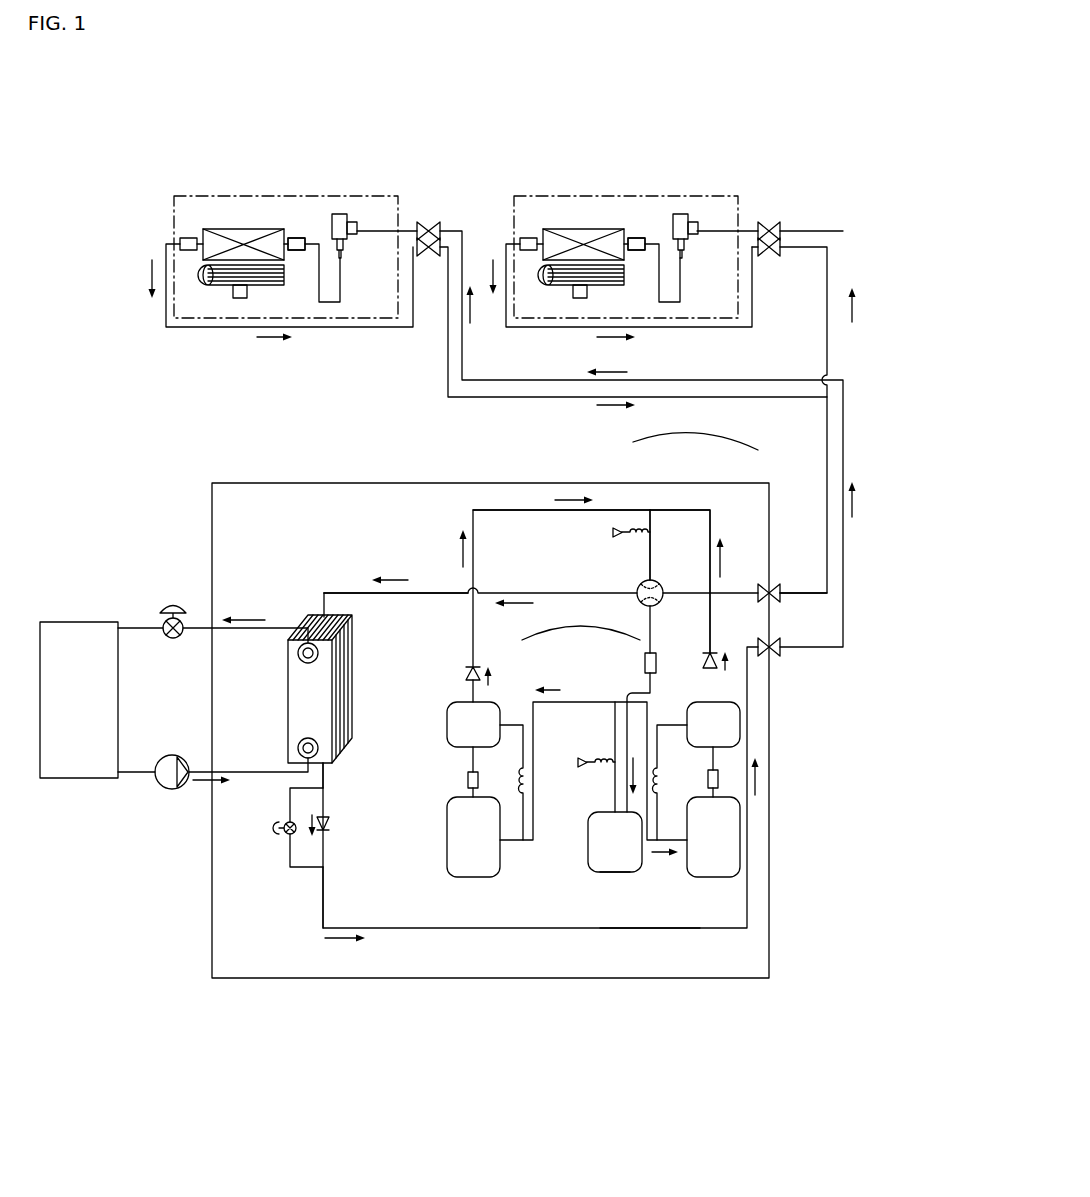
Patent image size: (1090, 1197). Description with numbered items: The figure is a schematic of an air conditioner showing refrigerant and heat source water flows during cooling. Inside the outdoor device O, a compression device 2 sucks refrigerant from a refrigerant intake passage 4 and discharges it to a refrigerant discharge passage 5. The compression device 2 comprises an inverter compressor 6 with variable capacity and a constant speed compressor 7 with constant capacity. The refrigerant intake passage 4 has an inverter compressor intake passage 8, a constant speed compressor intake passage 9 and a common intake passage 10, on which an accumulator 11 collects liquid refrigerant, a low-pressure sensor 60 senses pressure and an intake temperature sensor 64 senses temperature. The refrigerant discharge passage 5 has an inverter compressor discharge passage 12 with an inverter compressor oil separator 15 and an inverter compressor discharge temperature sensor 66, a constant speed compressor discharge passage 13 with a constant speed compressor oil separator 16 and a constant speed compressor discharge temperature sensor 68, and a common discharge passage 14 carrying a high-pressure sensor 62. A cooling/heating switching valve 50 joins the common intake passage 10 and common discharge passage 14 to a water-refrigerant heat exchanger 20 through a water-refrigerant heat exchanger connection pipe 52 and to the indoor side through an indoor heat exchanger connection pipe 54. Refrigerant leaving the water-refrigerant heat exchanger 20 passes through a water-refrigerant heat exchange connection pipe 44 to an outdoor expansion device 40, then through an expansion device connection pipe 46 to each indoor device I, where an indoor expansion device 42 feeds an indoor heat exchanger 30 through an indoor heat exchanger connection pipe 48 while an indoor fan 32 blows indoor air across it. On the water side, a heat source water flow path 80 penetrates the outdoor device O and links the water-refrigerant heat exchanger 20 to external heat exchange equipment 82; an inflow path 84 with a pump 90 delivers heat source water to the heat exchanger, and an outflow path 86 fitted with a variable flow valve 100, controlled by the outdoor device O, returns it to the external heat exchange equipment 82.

The indoor device I is at (395, 184).
The indoor heat exchanger 30 is at (214, 240).
The indoor fan 32 is at (205, 275).
The indoor expansion device 42 is at (339, 222).
The indoor heat exchanger connection pipe 48 is at (305, 241).
The outdoor device O is at (752, 992).
The compression device 2 is at (448, 900).
The refrigerant intake passage 4 is at (581, 621).
The refrigerant discharge passage 5 is at (695, 431).
The inverter compressor 6 is at (447, 840).
The constant speed compressor 7 is at (733, 845).
The inverter compressor intake passage 8 is at (572, 702).
The constant speed compressor intake passage 9 is at (613, 737).
The common intake passage 10 is at (590, 702).
The accumulator 11 is at (620, 872).
The inverter compressor discharge passage 12 is at (608, 510).
The constant speed compressor discharge passage 13 is at (710, 510).
The common discharge passage 14 is at (650, 545).
The inverter compressor oil separator 15 is at (447, 725).
The constant speed compressor oil separator 16 is at (697, 702).
The water-refrigerant heat exchanger 20 is at (303, 615).
The outdoor expansion device 40 is at (285, 835).
The water-refrigerant heat exchange connection pipe 44 is at (327, 776).
The expansion device connection pipe 46 is at (655, 928).
The cooling/heating switching valve 50 is at (657, 583).
The water-refrigerant heat exchanger connection pipe 52 is at (427, 593).
The indoor heat exchanger connection pipe 54 is at (795, 593).
The low-pressure sensor 60 is at (578, 765).
The high-pressure sensor 62 is at (611, 532).
The intake temperature sensor 64 is at (651, 653).
The inverter compressor discharge temperature sensor 66 is at (468, 780).
The constant speed compressor discharge temperature sensor 68 is at (708, 778).
The heat source water flow path 80 is at (237, 658).
The external heat exchange equipment 82 is at (78, 768).
The inflow path 84 is at (135, 770).
The outflow path 86 is at (137, 632).
The pump 90 is at (163, 790).
The variable flow valve 100 is at (163, 622).